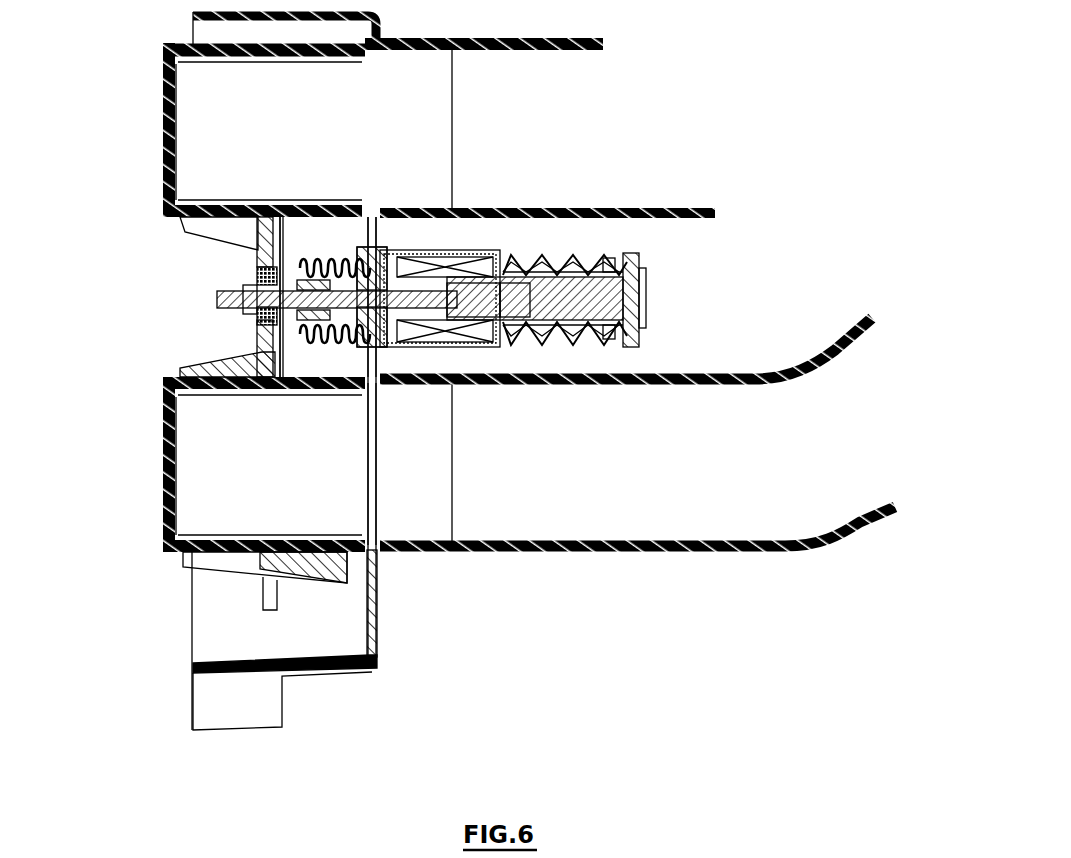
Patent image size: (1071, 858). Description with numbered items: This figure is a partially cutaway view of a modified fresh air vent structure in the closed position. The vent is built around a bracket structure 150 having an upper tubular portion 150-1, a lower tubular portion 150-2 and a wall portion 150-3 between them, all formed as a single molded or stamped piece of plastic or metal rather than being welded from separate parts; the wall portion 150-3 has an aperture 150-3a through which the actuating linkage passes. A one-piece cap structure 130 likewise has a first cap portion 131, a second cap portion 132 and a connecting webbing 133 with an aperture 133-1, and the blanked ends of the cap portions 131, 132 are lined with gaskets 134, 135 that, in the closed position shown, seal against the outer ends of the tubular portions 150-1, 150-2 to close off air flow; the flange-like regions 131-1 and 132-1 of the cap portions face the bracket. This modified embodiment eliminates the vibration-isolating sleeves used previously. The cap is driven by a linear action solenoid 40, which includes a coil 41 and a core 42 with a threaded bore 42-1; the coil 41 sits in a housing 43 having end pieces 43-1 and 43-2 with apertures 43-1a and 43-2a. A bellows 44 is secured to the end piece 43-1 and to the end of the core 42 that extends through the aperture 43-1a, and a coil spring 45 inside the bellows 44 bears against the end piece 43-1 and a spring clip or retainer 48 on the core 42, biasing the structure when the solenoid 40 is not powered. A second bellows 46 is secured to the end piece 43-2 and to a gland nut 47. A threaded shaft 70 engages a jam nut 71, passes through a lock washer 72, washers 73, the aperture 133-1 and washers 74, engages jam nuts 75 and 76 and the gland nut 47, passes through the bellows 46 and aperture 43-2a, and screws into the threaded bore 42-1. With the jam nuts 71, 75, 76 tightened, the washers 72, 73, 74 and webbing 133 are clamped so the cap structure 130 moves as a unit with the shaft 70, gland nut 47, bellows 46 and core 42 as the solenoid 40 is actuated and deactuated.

The linear action solenoid 40 is at (636, 186).
The coil 41 is at (481, 312).
The core 42 is at (540, 255).
The threaded bore 42-1 is at (493, 318).
The housing 43 is at (462, 248).
The end piece 43-1 is at (520, 216).
The aperture 43-1a is at (560, 333).
The end piece 43-2 is at (395, 255).
The aperture 43-2a is at (393, 300).
The bellows 44 is at (588, 255).
The coil spring 45 is at (625, 272).
The bellows 46 is at (352, 247).
The gland nut 47 is at (352, 248).
The spring clip or retainer 48 is at (630, 325).
The threaded shaft 70 is at (217, 296).
The jam nut 71 is at (250, 307).
The lock washer 72 is at (260, 323).
The washers 73 is at (250, 388).
The washers 74 is at (272, 280).
The jam nut 75 is at (280, 287).
The jam nut 76 is at (298, 317).
The cap structure 130 is at (122, 460).
The cap portion 131 is at (163, 120).
The upper housing flange 131-1 is at (230, 232).
The cap portion 132 is at (162, 513).
The lower housing flange 132-1 is at (220, 562).
The webbing portion 133 is at (257, 275).
The aperture 133-1 is at (250, 290).
The gasket 134 is at (176, 88).
The gasket 135 is at (177, 455).
The bracket structure 150 is at (388, 647).
The tubular portion 150-1 is at (385, 207).
The tubular portion 150-2 is at (413, 541).
The wall portion 150-3 is at (382, 216).
The aperture 150-3a is at (358, 387).